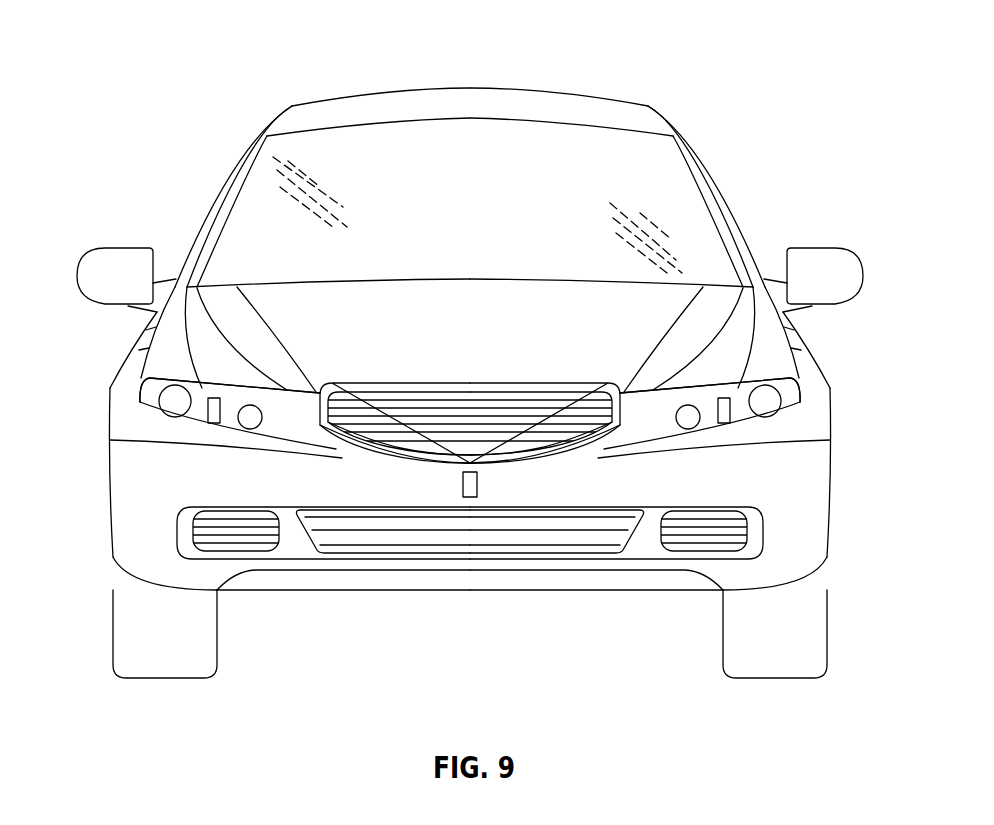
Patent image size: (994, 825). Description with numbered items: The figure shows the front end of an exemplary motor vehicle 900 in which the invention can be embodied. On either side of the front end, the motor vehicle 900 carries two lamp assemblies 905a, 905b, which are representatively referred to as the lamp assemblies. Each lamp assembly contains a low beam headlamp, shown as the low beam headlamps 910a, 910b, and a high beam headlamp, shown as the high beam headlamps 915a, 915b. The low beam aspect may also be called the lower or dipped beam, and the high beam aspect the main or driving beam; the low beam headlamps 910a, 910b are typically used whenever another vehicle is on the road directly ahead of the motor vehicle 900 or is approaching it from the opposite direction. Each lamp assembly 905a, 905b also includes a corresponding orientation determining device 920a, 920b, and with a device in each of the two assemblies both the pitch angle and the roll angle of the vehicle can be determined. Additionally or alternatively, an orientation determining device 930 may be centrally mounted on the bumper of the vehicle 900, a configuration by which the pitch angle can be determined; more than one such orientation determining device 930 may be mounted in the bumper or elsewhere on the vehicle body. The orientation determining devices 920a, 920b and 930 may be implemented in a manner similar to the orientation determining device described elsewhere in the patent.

The motor vehicle 900 is at (257, 39).
The lamp assembly 905a is at (152, 390).
The lamp assembly 905b is at (780, 383).
The low beam headlamp 910a is at (173, 402).
The low beam headlamp 910b is at (763, 407).
The high beam headlamp 915a is at (260, 410).
The high beam headlamp 915b is at (680, 408).
The orientation determining device 920a is at (213, 423).
The orientation determining device 920b is at (722, 423).
The orientation determining device 930 is at (478, 494).